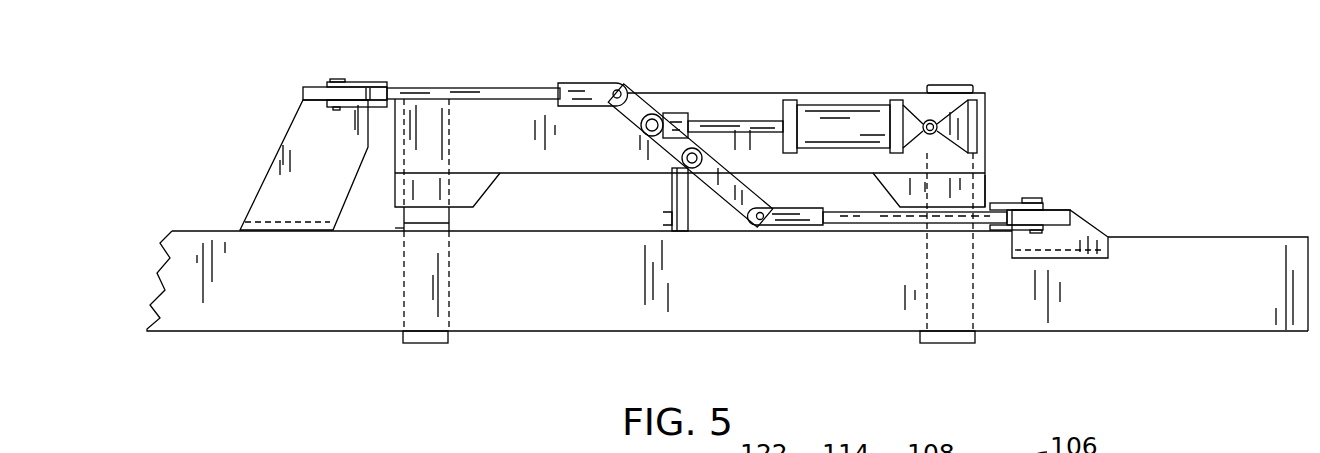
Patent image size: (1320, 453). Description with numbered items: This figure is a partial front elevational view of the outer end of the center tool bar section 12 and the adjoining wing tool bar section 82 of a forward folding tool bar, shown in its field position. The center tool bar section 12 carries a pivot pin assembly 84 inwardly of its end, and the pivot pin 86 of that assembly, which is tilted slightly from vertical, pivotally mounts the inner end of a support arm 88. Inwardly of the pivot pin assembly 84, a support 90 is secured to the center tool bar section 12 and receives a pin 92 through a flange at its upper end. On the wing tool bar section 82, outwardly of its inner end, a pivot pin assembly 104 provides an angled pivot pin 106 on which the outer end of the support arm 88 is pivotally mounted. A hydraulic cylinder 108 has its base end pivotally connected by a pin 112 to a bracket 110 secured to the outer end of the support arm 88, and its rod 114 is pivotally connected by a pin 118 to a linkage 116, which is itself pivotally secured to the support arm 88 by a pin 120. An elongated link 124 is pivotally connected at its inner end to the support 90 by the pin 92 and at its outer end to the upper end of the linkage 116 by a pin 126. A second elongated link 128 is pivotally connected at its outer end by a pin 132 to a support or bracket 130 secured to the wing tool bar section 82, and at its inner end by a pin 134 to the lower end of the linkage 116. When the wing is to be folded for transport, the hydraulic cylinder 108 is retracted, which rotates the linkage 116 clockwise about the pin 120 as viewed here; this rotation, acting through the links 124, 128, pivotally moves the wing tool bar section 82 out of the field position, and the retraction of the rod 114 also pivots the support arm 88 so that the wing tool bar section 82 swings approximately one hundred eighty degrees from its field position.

The center tool bar section 12 is at (273, 292).
The wing tool bar section 82 is at (1209, 224).
The pivot pin assembly 84 is at (393, 233).
The pivot pin 86 is at (438, 335).
The support arm 88 is at (599, 159).
The support 90 is at (327, 145).
The pin 92 is at (340, 80).
The pivot pin assembly 104 is at (992, 188).
The pivot pin 106 is at (948, 83).
The hydraulic cylinder 108 is at (843, 120).
The bracket 110 is at (987, 117).
The pin 112 is at (933, 113).
The rod 114 is at (730, 127).
The linkage 116 is at (737, 185).
The pin 118 is at (650, 114).
The pin 120 is at (682, 160).
The connecting rod 124 is at (480, 97).
The pin 126 is at (614, 89).
The elongated link 128 is at (990, 214).
The support or bracket 130 is at (1080, 227).
The pin 132 is at (1038, 197).
The pin 134 is at (758, 226).